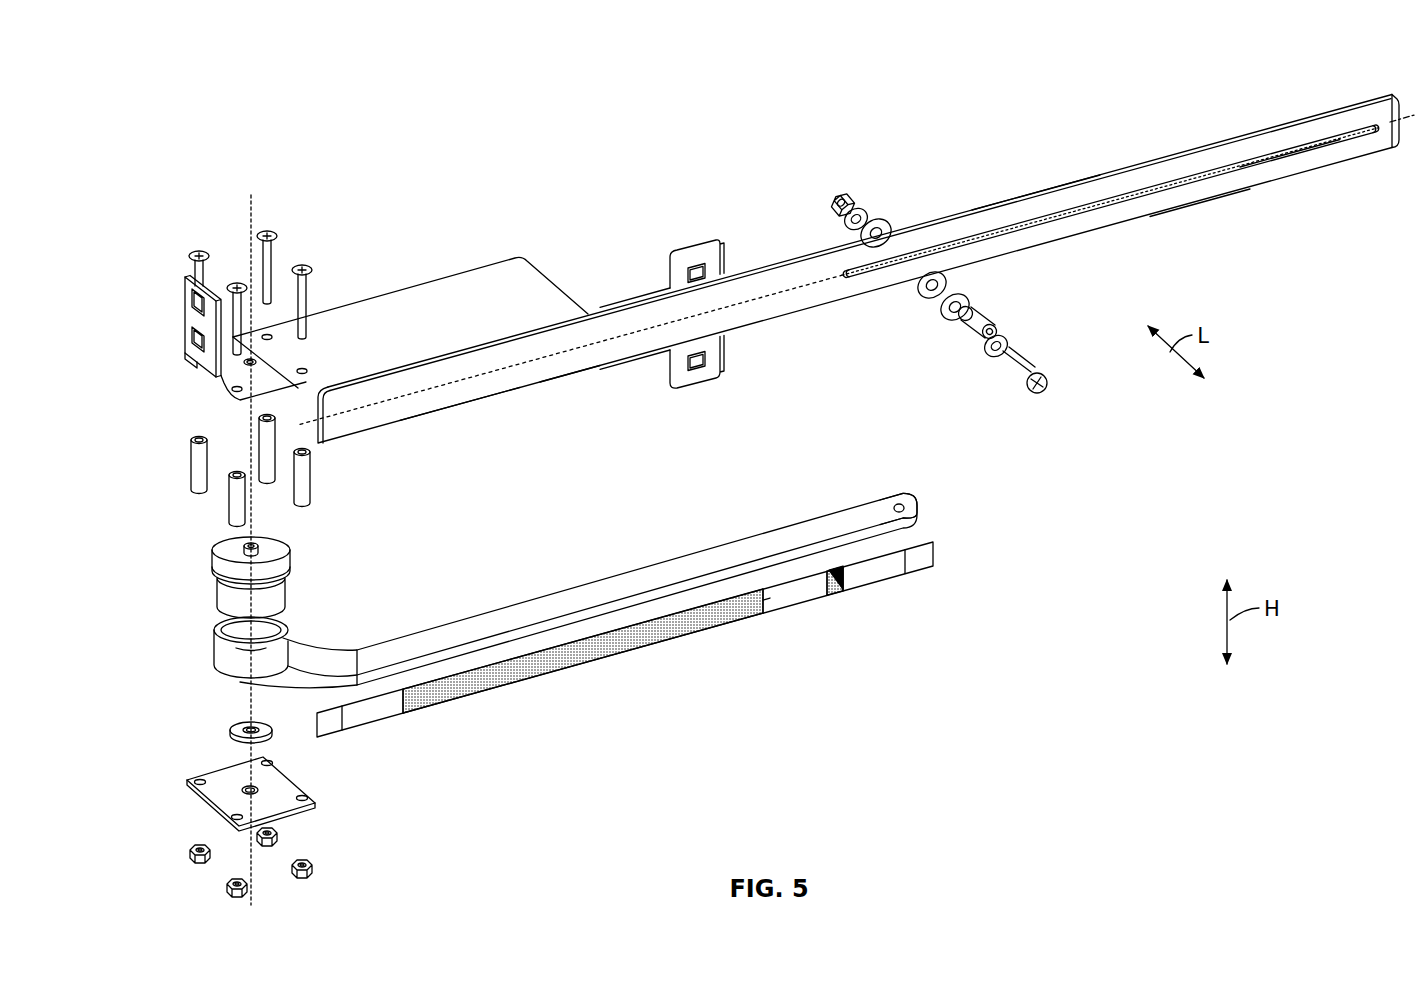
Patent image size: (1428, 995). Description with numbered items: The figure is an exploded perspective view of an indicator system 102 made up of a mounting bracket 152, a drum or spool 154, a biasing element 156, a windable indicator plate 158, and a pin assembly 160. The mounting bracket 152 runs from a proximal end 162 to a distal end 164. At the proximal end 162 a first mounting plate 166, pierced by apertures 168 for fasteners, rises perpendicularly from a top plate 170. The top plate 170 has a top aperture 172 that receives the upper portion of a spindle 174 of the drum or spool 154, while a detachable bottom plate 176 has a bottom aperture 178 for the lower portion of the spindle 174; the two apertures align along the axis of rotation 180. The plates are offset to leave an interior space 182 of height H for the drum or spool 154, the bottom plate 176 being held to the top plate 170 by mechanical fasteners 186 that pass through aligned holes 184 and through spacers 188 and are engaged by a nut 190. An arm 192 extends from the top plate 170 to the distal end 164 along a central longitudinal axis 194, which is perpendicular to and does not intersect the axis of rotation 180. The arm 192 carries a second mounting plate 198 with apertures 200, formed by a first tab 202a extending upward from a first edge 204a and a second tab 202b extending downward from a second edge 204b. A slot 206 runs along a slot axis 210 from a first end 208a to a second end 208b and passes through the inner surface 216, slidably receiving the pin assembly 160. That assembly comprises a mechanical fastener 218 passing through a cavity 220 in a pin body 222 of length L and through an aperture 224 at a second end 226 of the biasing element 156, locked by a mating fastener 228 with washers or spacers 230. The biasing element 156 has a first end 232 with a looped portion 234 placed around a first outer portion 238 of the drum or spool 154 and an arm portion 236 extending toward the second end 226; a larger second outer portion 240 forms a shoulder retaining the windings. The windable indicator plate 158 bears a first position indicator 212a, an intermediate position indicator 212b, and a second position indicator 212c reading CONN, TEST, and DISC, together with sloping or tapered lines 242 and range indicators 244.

The indicator system 102 is at (1020, 103).
The mounting bracket 152 is at (531, 290).
The drum or spool 154 is at (287, 594).
The biasing element 156 is at (592, 592).
The windable indicator plate 158 is at (723, 622).
The pin assembly 160 is at (1006, 310).
The proximal end 162 is at (207, 372).
The distal end 164 is at (1386, 108).
The first mounting plate 166 is at (197, 317).
The apertures 168 is at (192, 296).
The top plate 170 is at (460, 300).
The top aperture 172 is at (250, 366).
The spindle 174 is at (262, 551).
The bottom plate 176 is at (283, 782).
The bottom aperture 178 is at (256, 794).
The axis of rotation 180 is at (253, 501).
The interior space 182 is at (205, 574).
The holes 184 is at (269, 334).
The mechanical fasteners 186 is at (270, 242).
The spacers 188 is at (191, 462).
The nut 190 is at (190, 852).
The arm 192 is at (775, 268).
The central longitudinal axis 194 is at (570, 353).
The second mounting plate 198 is at (716, 260).
The apertures 200 is at (697, 268).
The first tab 202a is at (673, 274).
The second tab 202b is at (722, 366).
The first edge 204a is at (972, 207).
The second edge 204b is at (478, 404).
The slot 206 is at (1170, 180).
The first end 208a is at (853, 286).
The second end 208b is at (1374, 133).
The slot axis 210 is at (1293, 142).
The inner surface 216 is at (1172, 200).
The mechanical fastener 218 is at (1023, 366).
The cavity 220 is at (979, 337).
The pin body 222 is at (973, 315).
The aperture 224 is at (920, 510).
The second end 226 is at (906, 494).
The mating fastener 228 is at (849, 195).
The washers or spacers 230 is at (886, 226).
The first end 232 is at (213, 655).
The looped portion 234 is at (272, 640).
The arm portion 236 is at (737, 550).
The first outer portion 238 is at (228, 596).
The second outer portion 240 is at (212, 562).
The sloping or tapered lines 242 is at (824, 573).
The range indicators 244 is at (834, 568).
The first position indicator 212a is at (893, 587).
The intermediate position indicator 212b is at (803, 607).
The second position indicator 212c is at (388, 725).